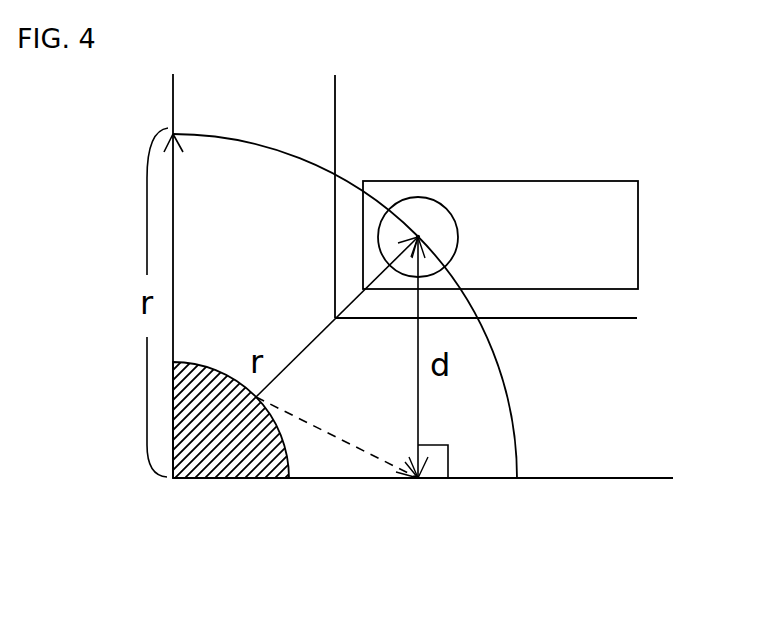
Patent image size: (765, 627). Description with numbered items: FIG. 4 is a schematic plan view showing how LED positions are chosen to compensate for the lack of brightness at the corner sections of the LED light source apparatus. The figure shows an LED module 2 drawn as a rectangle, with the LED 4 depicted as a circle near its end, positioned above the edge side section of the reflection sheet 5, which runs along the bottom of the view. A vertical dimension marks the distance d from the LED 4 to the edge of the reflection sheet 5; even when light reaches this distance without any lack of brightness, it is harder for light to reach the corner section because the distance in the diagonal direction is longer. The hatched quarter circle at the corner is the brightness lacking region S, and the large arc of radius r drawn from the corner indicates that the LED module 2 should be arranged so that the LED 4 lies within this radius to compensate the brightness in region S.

The LED module 2 is at (564, 181).
The LED 4 is at (421, 203).
The reflection sheet 5 is at (585, 478).
The brightness lacking region S is at (263, 470).